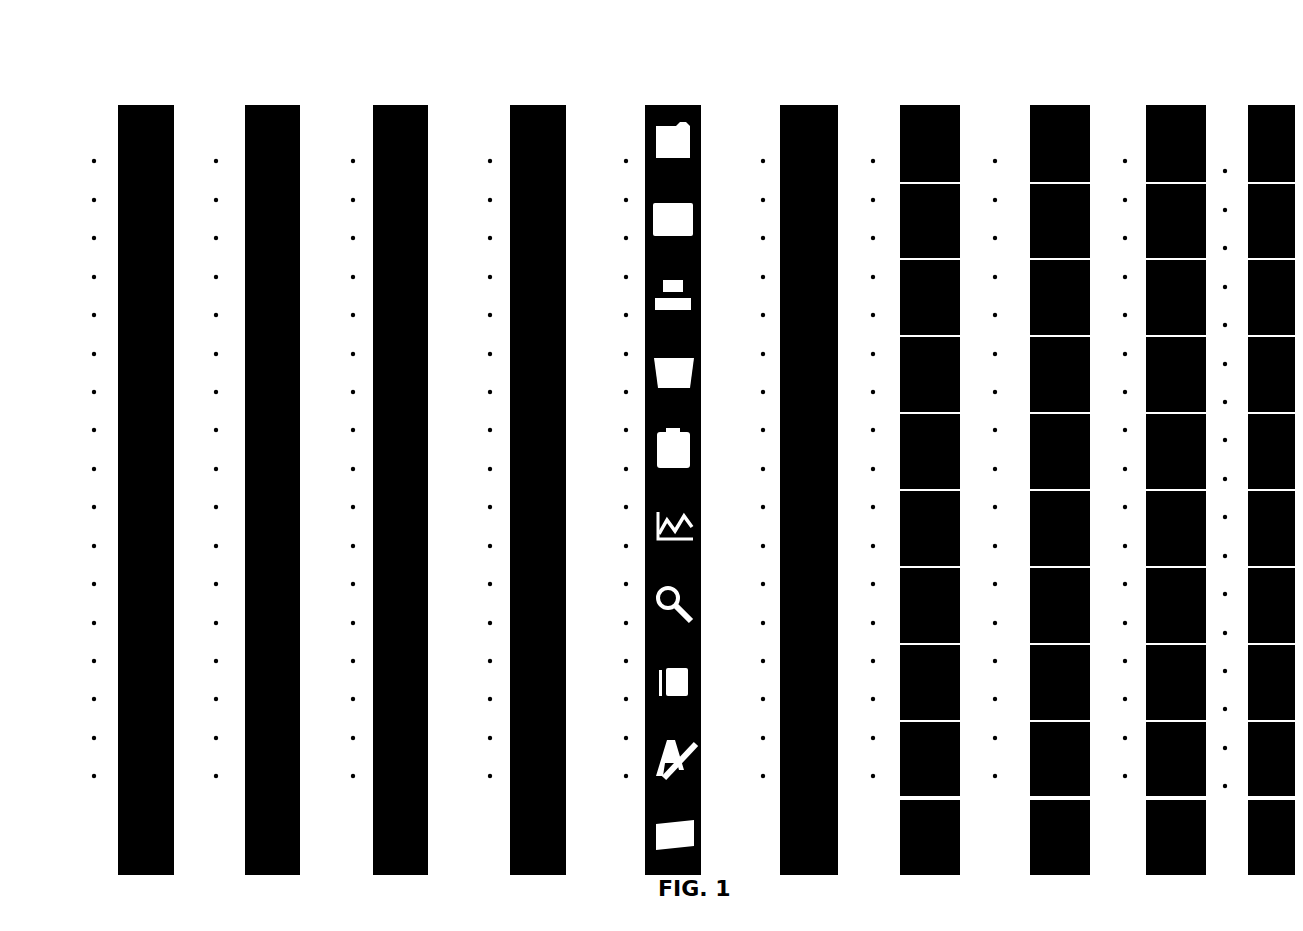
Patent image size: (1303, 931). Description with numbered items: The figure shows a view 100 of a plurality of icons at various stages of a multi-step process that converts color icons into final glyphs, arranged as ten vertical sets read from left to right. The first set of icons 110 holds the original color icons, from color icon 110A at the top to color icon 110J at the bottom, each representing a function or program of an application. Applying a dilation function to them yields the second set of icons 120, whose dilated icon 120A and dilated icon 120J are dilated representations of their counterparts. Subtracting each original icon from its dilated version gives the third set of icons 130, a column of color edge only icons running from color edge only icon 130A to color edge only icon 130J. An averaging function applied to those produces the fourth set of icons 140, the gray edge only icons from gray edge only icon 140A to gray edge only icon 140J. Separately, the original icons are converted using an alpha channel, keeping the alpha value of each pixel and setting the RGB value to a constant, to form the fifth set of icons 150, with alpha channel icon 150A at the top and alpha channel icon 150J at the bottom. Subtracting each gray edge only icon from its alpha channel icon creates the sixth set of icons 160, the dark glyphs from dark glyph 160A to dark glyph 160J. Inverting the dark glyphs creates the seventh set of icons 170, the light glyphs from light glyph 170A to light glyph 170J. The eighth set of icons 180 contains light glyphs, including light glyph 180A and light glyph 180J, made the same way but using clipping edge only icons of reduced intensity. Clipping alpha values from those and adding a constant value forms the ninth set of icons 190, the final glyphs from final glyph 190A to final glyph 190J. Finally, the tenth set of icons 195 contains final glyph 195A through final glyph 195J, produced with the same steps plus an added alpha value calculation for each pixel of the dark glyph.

The view 100 is at (98, 57).
The first set of icons 110 is at (132, 97).
The color icon 110A is at (110, 138).
The color icon 110J is at (110, 828).
The second set of icons 120 is at (259, 97).
The dilated icon 120A is at (237, 138).
The dilated icon 120J is at (237, 828).
The third set of icons 130 is at (384, 97).
The color edge only icon 130A is at (365, 138).
The color edge only icon 130J is at (365, 828).
The fourth set of icons 140 is at (518, 97).
The gray edge only icon 140A is at (502, 138).
The gray edge only icon 140J is at (502, 828).
The fifth set of icons 150 is at (653, 97).
The alpha channel icon 150A is at (637, 138).
The alpha channel icon 150J is at (637, 828).
The sixth set of icons 160 is at (790, 97).
The dark glyph 160A is at (772, 138).
The dark glyph 160J is at (772, 828).
The seventh set of icons 170 is at (923, 97).
The light glyph 170A is at (892, 138).
The light glyph 170J is at (892, 828).
The eighth set of icons 180 is at (1058, 97).
The light glyph 180A is at (1022, 138).
The light glyph 180J is at (1022, 828).
The ninth set of icons 190 is at (1178, 97).
The final glyph 190A is at (1138, 138).
The final glyph 190J is at (1138, 828).
The tenth set of icons 195 is at (1266, 97).
The final glyph 195A is at (1240, 138).
The final glyph 195J is at (1240, 828).